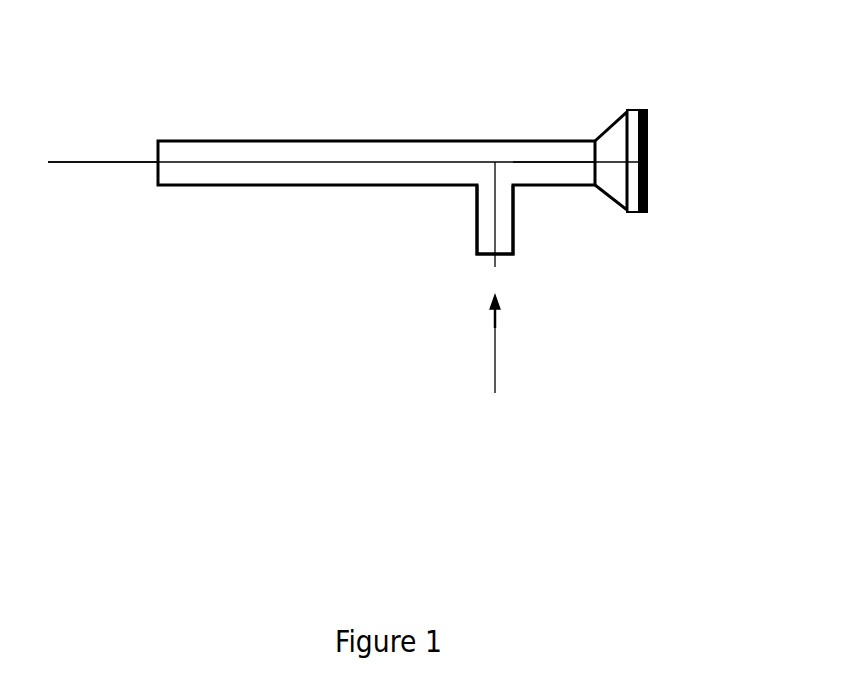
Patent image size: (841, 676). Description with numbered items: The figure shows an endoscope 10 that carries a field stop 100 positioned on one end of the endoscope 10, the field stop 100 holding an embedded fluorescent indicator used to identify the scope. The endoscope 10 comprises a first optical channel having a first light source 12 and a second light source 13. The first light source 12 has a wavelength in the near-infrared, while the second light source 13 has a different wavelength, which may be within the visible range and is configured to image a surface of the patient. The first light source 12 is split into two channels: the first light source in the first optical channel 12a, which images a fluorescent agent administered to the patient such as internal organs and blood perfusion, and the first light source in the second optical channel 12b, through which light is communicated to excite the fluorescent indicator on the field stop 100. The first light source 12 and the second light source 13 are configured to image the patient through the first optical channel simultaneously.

The endoscope 10 is at (255, 141).
The first light source 12 is at (493, 270).
The first light source in the first optical channel 12a is at (72, 161).
The first light source in the second optical channel 12b is at (518, 162).
The second light source 13 is at (343, 277).
The field stop 100 is at (642, 110).